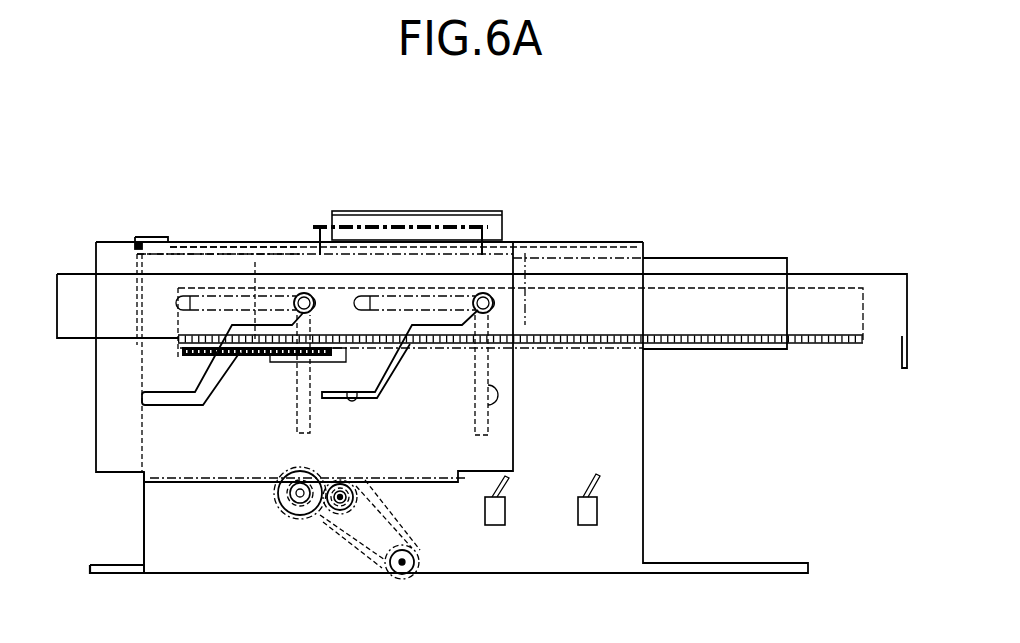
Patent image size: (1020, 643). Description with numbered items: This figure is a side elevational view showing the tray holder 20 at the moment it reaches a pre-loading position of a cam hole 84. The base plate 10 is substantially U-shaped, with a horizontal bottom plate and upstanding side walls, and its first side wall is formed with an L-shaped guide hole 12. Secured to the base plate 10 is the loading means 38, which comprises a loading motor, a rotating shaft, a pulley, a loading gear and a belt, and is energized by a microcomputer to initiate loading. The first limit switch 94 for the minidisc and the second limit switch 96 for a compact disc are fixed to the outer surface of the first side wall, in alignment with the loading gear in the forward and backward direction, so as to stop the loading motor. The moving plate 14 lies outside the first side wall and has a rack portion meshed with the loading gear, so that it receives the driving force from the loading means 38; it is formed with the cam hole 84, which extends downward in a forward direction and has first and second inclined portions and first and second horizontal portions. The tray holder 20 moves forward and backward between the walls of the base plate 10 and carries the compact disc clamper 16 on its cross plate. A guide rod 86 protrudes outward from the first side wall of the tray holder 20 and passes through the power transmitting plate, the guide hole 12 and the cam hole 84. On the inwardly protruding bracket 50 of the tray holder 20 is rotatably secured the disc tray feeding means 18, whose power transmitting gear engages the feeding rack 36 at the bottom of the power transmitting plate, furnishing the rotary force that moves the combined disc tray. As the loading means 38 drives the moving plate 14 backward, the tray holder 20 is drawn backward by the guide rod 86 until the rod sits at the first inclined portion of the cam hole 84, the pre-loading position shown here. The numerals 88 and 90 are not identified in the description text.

The base plate 10 is at (122, 565).
The guide hole 12 is at (492, 407).
The moving plate 14 is at (210, 455).
The compact disc clamper 16 is at (395, 227).
The disc tray feeding means 18 is at (168, 364).
The tray holder 20 is at (298, 260).
The feeding rack 36 is at (180, 352).
The loading means 38 is at (313, 528).
The bracket 50 is at (287, 360).
The cam hole 84 is at (453, 322).
The guide rod 86 is at (490, 297).
The rack 88 is at (431, 340).
The stop tab 90 is at (355, 393).
The first limit switch 94 is at (502, 516).
The second limit switch 96 is at (598, 481).